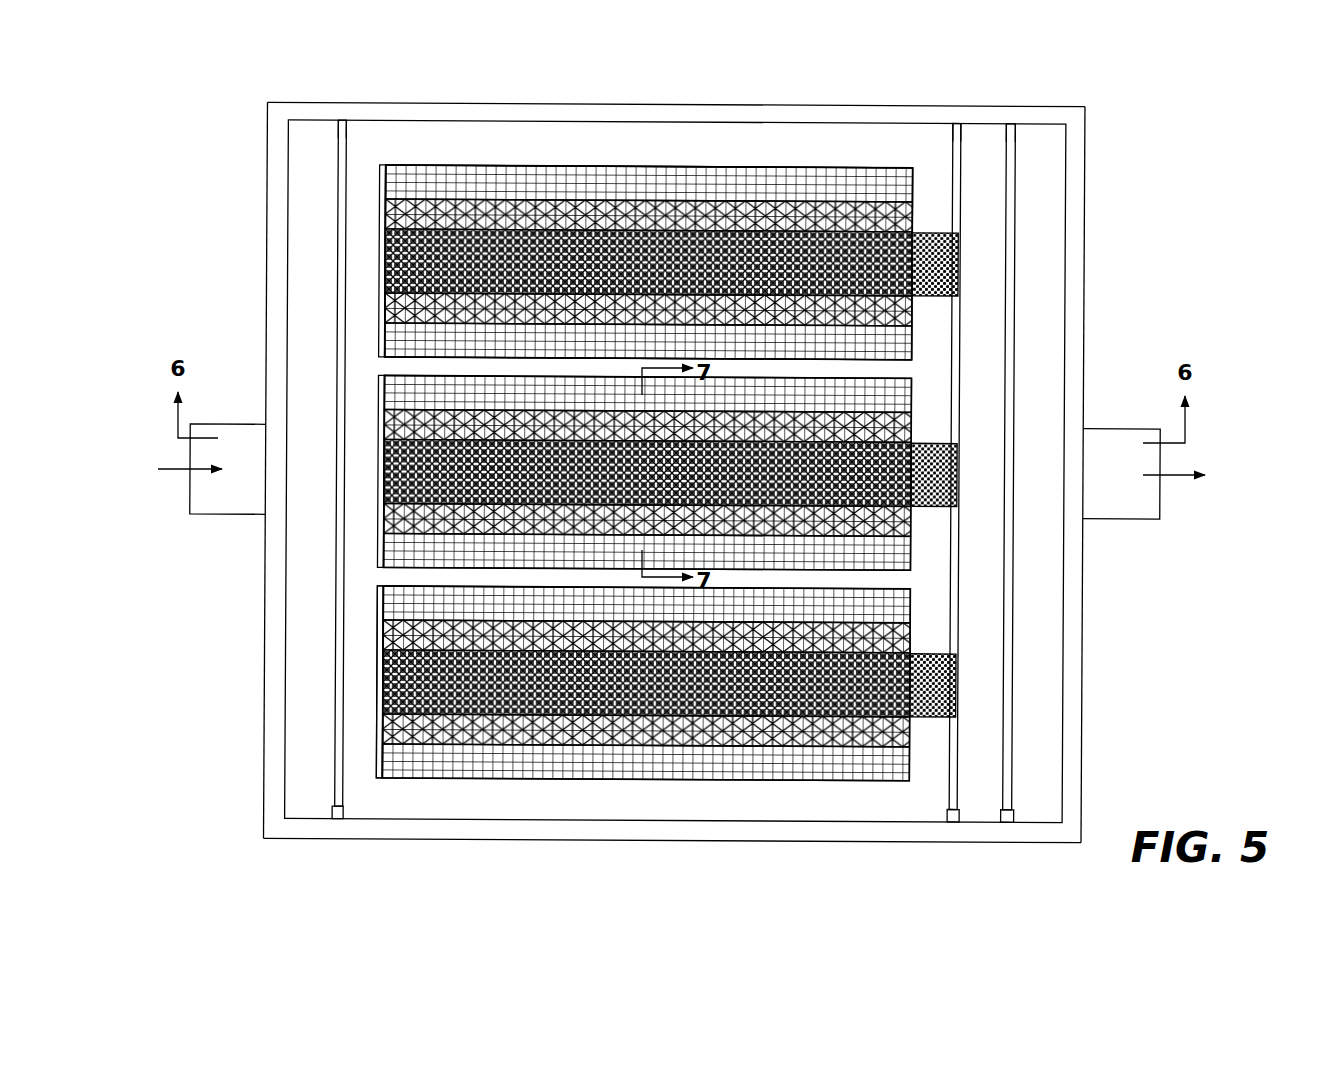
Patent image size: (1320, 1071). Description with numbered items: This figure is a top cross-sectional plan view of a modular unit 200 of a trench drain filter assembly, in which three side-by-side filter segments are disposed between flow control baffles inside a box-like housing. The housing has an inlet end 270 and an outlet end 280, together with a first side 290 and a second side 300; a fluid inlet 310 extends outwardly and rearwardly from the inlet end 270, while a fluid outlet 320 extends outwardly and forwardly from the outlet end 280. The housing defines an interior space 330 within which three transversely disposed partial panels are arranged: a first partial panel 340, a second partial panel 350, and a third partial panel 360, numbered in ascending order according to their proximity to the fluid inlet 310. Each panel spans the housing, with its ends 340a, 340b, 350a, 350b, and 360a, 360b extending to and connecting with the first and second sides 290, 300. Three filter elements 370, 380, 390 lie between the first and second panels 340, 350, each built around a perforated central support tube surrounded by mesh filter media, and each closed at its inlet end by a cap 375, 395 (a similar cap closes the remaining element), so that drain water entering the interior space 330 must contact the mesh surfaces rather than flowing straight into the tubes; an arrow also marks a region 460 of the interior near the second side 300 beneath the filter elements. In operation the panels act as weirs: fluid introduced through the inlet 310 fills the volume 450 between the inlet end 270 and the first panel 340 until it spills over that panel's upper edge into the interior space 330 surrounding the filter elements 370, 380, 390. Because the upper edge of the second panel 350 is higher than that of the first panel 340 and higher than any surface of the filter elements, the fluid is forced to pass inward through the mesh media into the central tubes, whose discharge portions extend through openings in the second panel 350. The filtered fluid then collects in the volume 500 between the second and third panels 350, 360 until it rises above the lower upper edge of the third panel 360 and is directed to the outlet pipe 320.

The modular unit 200 is at (1163, 113).
The inlet end 270 is at (264, 623).
The outlet end 280 is at (1086, 665).
The first side 290 is at (888, 104).
The second side 300 is at (472, 840).
The fluid inlet 310 is at (241, 515).
The fluid outlet 320 is at (1152, 520).
The interior space 330 is at (631, 798).
The first partial panel 340 is at (338, 194).
The first panel end 340a is at (336, 812).
The first panel end 340b is at (338, 128).
The second partial panel 350 is at (961, 178).
The second panel end 350a is at (962, 820).
The second panel end 350b is at (961, 132).
The third partial panel 360 is at (1016, 235).
The third panel end 360a is at (1016, 818).
The third panel end 360b is at (1016, 132).
The filter element 370 is at (380, 637).
The cap 375 is at (385, 780).
The filter element 380 is at (380, 523).
The filter element 390 is at (383, 227).
The cap 395 is at (386, 163).
The volume 450 is at (313, 370).
The bottom gap 460 is at (750, 802).
The volume 500 is at (979, 436).